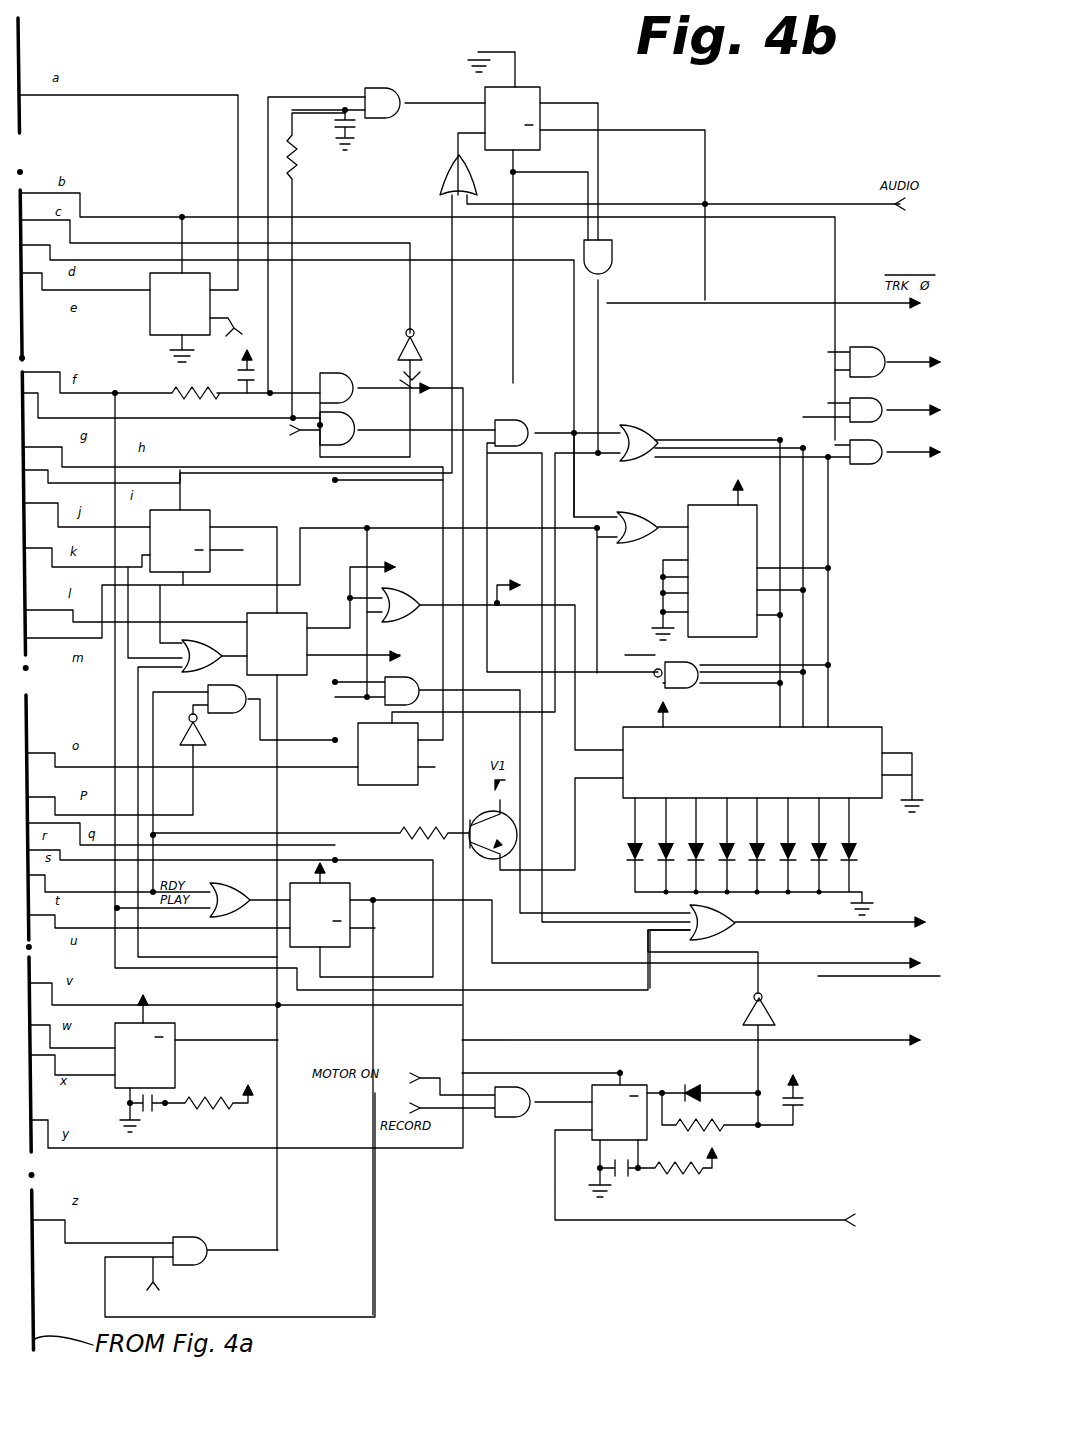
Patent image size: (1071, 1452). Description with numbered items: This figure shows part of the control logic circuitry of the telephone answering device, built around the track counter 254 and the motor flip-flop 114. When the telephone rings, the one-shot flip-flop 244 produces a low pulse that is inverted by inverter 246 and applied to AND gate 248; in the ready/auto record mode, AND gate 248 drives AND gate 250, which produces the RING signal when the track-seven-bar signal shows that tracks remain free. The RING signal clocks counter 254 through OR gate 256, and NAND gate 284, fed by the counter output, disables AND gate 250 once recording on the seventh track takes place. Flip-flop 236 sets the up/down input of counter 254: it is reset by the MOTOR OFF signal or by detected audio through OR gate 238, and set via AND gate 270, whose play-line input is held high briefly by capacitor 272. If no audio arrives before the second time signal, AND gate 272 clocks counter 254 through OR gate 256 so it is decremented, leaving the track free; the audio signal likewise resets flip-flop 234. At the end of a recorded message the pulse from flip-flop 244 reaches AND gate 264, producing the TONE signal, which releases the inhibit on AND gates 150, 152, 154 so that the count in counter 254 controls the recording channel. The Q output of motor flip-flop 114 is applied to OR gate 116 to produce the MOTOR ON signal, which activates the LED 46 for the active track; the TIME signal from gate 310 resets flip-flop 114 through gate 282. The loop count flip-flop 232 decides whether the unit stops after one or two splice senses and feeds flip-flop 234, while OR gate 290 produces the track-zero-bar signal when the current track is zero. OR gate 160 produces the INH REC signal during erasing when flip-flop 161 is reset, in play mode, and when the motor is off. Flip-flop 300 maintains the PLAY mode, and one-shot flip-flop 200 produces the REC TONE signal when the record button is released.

The flip-flop 300 is at (155, 338).
The AND gate 270 is at (385, 90).
The capacitor 272 is at (360, 134).
The flip-flop 236 is at (550, 94).
The OR gate 238 is at (440, 183).
The AND gate 264 is at (360, 370).
The AND gate 248 is at (356, 444).
The AND gate 250 is at (545, 420).
The OR gate 290 is at (660, 412).
The OR gate 256 is at (660, 500).
The counter 254 is at (755, 532).
The AND gate 150 is at (880, 340).
The AND gate 152 is at (866, 400).
The AND gate 154 is at (871, 442).
The flip-flop 234 is at (210, 512).
The motor flip-flop 114 is at (247, 607).
The gate 282 is at (185, 640).
The OR gate 116 is at (425, 582).
The loop count flip-flop 232 is at (435, 767).
The flip-flop 161 is at (350, 882).
The LED 46 is at (867, 847).
The OR gate 160 is at (726, 928).
The inverter 246 is at (775, 1010).
The one-shot flip-flop 244 is at (590, 1085).
The one-shot flip-flop 200 is at (124, 1080).
The gate 310 is at (200, 1235).
The NAND gate 284 is at (696, 668).